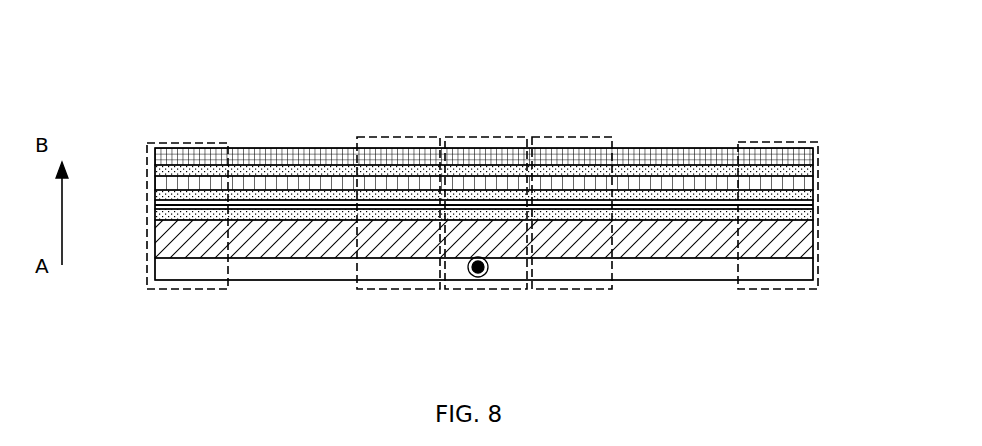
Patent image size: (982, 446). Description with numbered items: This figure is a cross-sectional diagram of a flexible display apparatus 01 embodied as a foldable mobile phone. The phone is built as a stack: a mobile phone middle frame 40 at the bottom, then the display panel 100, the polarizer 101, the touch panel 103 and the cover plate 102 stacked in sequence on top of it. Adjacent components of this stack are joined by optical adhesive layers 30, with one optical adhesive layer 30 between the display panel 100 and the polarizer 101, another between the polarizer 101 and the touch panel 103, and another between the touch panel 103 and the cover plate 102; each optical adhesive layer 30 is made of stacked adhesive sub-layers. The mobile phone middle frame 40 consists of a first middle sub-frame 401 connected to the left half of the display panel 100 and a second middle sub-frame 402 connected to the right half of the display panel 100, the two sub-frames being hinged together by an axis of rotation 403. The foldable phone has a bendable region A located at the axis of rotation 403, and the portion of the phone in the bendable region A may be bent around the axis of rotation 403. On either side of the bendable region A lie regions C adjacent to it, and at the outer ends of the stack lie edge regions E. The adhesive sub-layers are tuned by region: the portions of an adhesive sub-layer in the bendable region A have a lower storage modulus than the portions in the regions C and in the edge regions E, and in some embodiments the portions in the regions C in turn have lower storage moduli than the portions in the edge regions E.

The flexible display apparatus 01 is at (138, 68).
The optical adhesive layer 30 is at (158, 171).
The mobile phone middle frame 40 is at (170, 266).
The display panel 100 is at (808, 228).
The polarizer 101 is at (810, 205).
The cover plate 102 is at (810, 157).
The touch panel 103 is at (805, 181).
The first middle sub-frame 401 is at (297, 266).
The second middle sub-frame 402 is at (675, 266).
The axis of rotation 403 is at (475, 278).
The edge region E is at (190, 143).
The region adjacent to the bendable region C is at (393, 137).
The bendable region A is at (478, 137).